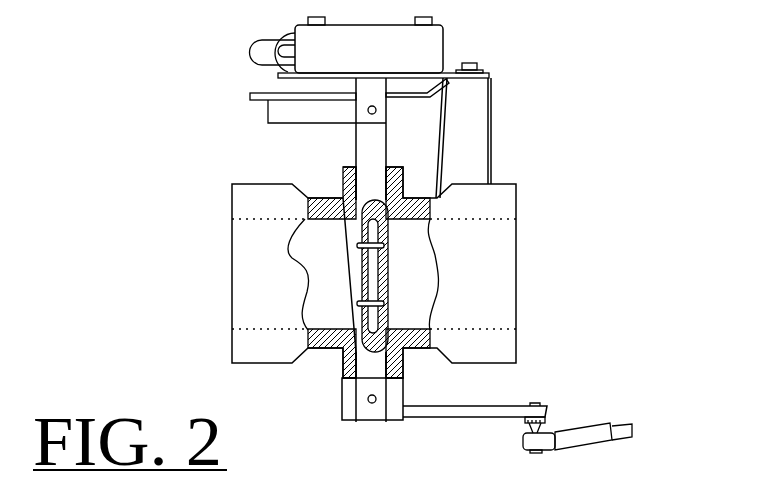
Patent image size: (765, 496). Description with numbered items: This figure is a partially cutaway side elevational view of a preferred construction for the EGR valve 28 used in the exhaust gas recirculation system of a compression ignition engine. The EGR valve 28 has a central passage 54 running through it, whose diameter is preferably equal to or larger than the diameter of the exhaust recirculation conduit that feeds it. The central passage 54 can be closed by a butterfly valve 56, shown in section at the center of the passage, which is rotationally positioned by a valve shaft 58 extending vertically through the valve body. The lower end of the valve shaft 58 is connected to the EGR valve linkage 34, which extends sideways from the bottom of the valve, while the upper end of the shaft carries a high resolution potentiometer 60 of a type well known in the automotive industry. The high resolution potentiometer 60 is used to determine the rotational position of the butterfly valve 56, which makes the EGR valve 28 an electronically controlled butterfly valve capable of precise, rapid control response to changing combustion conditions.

The EGR valve 28 is at (523, 163).
The EGR valve linkage 34 is at (500, 410).
The central passage 54 is at (412, 260).
The butterfly valve 56 is at (373, 277).
The valve shaft 58 is at (367, 148).
The high resolution potentiometer 60 is at (427, 47).